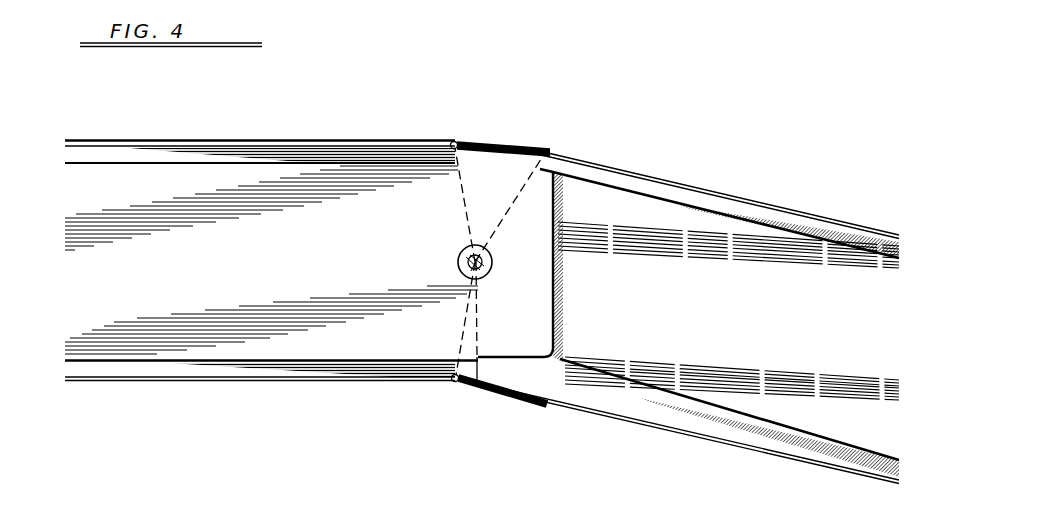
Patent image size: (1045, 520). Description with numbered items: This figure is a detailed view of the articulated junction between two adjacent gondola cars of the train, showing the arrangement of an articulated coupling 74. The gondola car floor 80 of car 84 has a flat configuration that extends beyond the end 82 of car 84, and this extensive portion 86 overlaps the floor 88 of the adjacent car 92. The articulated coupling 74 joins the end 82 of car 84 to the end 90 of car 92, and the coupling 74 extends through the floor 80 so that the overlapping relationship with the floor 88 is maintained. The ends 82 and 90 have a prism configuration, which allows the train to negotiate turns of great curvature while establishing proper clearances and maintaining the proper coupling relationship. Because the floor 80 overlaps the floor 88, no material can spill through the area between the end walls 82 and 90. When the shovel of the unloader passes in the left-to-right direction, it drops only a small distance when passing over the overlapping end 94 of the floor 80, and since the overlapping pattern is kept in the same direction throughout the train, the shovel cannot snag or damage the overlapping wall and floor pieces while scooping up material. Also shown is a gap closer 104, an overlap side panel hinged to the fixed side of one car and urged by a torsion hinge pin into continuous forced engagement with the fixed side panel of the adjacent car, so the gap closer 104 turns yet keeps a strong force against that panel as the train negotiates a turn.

The articulated coupling 74 is at (502, 267).
The gondola car floor 80 is at (250, 173).
The end of car 82 is at (462, 188).
The car 84 is at (170, 142).
The extensive portion 86 is at (532, 203).
The floor of adjacent car 88 is at (692, 227).
The end of car 90 is at (560, 164).
The car 92 is at (765, 207).
The overlapping end of floor 94 is at (492, 262).
The gap closer 104 is at (502, 152).